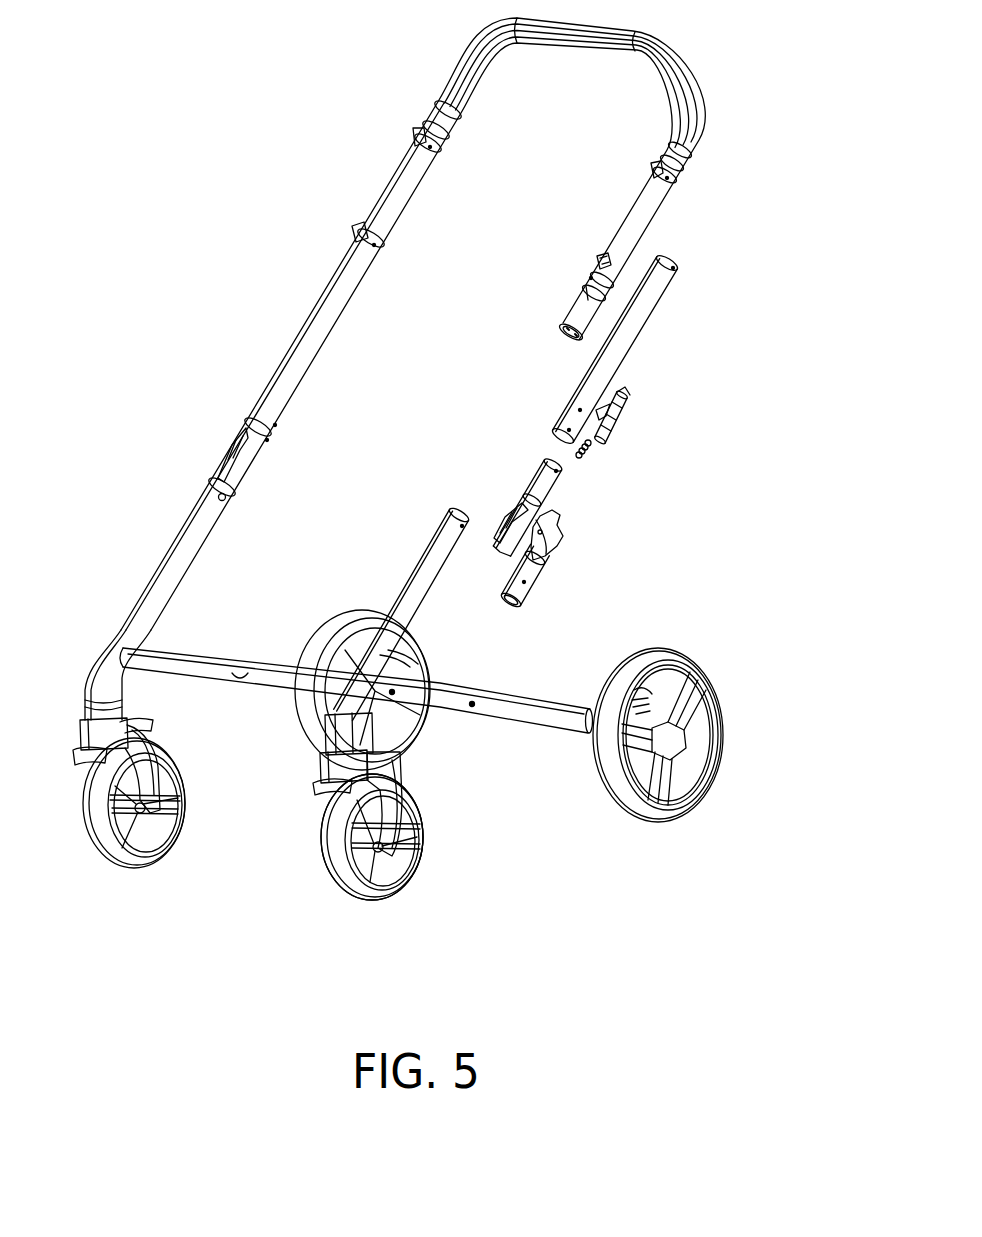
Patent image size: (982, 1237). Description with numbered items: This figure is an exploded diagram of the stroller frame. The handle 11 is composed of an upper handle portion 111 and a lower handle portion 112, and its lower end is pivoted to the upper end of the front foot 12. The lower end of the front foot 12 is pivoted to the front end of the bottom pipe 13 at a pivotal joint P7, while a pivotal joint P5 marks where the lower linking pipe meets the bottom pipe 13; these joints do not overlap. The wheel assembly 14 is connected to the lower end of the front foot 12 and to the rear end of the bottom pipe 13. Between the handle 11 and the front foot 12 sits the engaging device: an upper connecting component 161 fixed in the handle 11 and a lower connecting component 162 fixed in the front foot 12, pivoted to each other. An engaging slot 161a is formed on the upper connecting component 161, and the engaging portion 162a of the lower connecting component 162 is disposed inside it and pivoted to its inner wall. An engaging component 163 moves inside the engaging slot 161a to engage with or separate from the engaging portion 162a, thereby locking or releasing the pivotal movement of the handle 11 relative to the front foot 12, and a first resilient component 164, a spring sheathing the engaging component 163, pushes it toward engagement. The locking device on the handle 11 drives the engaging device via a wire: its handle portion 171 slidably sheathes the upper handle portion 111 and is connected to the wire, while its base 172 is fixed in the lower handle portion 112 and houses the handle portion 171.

The handle 11 is at (438, 369).
The upper handle portion 111 is at (627, 235).
The lower handle portion 112 is at (628, 330).
The front foot 12 is at (420, 580).
The bottom pipe 13 is at (532, 720).
The wheel assembly 14 is at (372, 898).
The upper connecting component 161 is at (462, 462).
The engaging slot 161a is at (503, 520).
The lower connecting component 162 is at (582, 581).
The engaging portion 162a is at (548, 552).
The engaging component 163 is at (620, 423).
The first resilient component 164 is at (592, 448).
The handle portion 171 is at (600, 257).
The base 172 is at (593, 287).
The pivotal joint P5 is at (472, 705).
The pivotal joint P7 is at (392, 692).